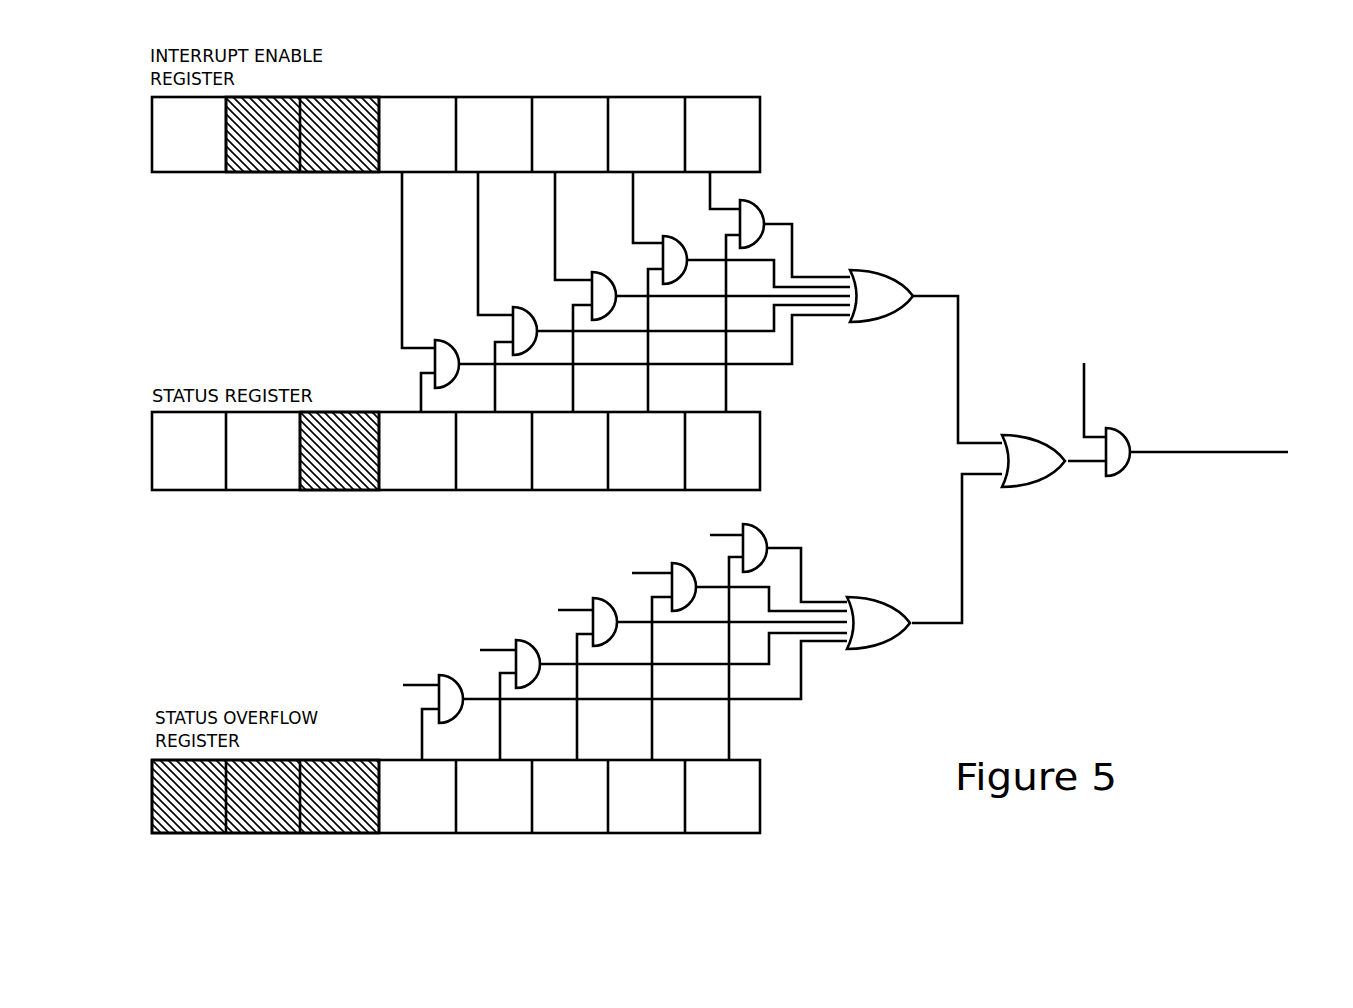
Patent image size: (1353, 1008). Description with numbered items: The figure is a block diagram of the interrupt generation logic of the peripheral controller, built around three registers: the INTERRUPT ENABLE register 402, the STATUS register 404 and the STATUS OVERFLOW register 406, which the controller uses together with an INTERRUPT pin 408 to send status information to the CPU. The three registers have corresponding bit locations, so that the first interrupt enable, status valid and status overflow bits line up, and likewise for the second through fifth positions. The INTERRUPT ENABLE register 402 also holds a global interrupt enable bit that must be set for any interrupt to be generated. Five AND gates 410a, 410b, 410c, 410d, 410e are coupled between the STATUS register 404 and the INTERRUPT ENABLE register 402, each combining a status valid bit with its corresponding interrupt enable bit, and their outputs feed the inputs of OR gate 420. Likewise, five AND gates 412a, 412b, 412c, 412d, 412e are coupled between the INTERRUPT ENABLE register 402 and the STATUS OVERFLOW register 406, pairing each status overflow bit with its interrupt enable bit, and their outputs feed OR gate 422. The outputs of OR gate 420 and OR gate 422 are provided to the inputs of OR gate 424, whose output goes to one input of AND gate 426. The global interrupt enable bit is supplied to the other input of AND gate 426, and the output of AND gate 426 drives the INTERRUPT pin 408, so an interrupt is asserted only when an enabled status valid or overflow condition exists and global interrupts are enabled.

The INTERRUPT ENABLE register 402 is at (200, 168).
The STATUS register 404 is at (190, 480).
The STATUS OVERFLOW register 406 is at (168, 833).
The INTERRUPT pin 408 is at (1233, 452).
The AND gate 410a is at (443, 341).
The AND gate 410b is at (521, 312).
The AND gate 410c is at (598, 273).
The AND gate 410d is at (674, 242).
The AND gate 410e is at (751, 205).
The AND gate 412a is at (448, 672).
The AND gate 412b is at (525, 637).
The AND gate 412c is at (596, 598).
The AND gate 412d is at (672, 563).
The AND gate 412e is at (757, 533).
The OR gate 420 is at (893, 290).
The OR gate 422 is at (895, 625).
The OR gate 424 is at (1029, 477).
The AND gate 426 is at (1113, 466).